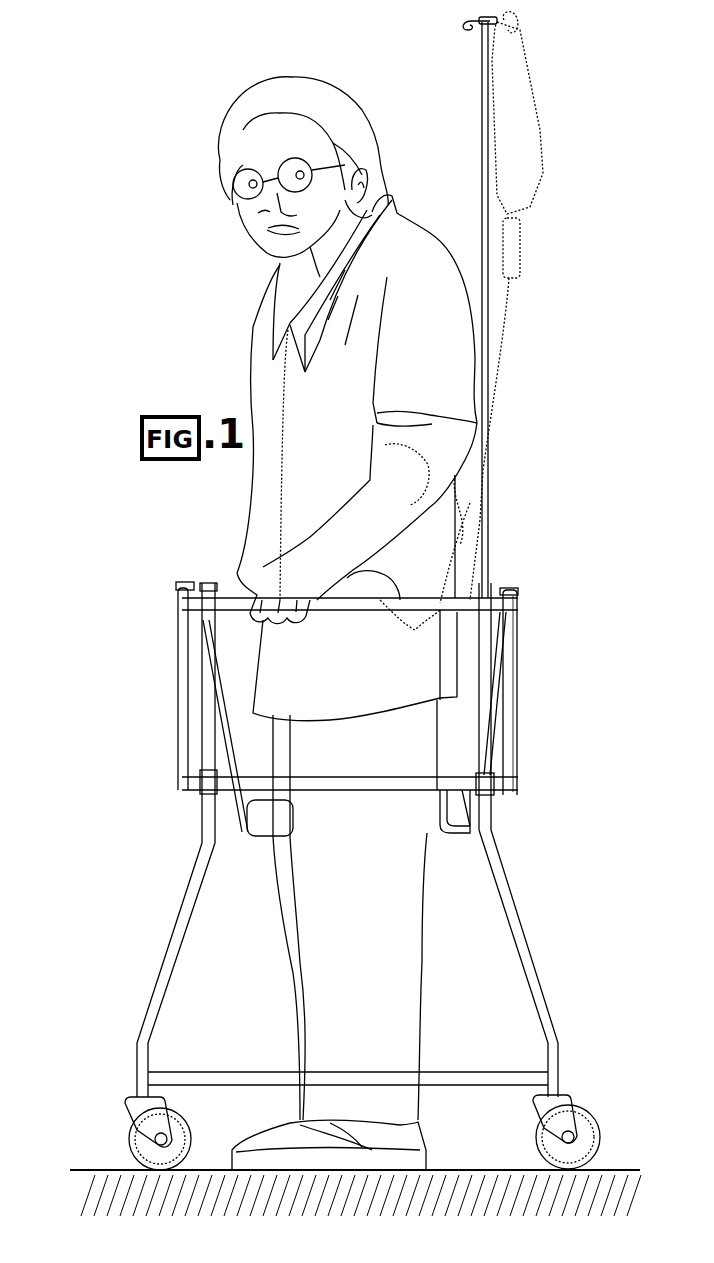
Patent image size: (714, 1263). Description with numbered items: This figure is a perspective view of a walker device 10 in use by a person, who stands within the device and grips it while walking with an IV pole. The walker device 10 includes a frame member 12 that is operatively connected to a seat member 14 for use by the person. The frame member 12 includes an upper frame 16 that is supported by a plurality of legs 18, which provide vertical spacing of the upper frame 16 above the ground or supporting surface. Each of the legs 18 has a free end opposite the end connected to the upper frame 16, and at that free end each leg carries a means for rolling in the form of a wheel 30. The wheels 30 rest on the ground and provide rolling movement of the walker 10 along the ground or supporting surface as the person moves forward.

The walker device 10 is at (70, 577).
The frame member 12 is at (176, 876).
The seat member 14 is at (466, 826).
The upper frame 16 is at (525, 686).
The plurality of legs 18 is at (543, 1006).
The wheel 30 is at (180, 1141).